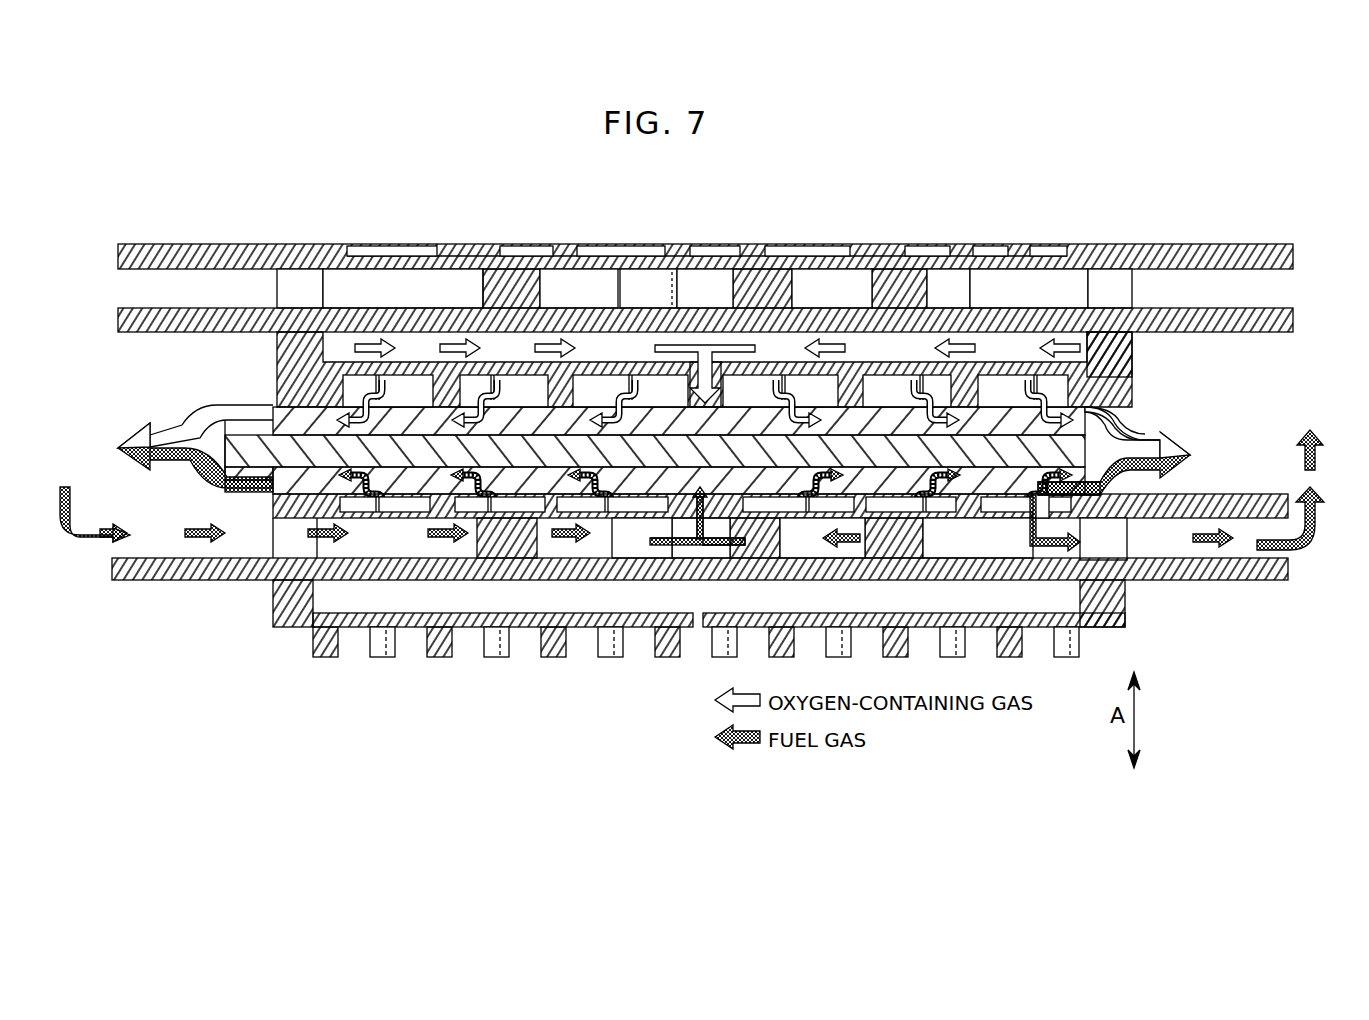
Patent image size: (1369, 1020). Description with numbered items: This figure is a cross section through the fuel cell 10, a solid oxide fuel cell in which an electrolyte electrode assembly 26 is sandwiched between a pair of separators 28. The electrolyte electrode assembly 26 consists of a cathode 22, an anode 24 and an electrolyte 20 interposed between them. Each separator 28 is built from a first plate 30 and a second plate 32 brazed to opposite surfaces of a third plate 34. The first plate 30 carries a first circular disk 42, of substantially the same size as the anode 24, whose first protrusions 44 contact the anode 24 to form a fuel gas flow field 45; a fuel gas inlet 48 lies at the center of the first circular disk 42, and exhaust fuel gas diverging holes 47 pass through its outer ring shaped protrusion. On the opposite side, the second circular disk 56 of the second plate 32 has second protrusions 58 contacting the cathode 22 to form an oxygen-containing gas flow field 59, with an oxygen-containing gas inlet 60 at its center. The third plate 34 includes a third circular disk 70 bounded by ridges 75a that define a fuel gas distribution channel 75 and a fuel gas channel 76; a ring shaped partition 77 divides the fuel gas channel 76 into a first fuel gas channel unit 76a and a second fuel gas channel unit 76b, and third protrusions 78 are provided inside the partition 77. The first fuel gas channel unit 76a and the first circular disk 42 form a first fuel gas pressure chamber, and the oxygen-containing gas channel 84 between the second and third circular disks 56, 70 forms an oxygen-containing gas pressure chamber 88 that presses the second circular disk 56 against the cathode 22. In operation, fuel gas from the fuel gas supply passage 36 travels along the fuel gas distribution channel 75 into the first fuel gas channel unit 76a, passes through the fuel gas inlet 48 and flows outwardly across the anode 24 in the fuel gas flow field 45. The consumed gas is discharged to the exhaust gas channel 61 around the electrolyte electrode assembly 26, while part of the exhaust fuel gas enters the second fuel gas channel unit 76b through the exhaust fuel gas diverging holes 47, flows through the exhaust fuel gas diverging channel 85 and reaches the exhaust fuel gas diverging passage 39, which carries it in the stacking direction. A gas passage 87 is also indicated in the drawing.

The fuel cell 10 is at (964, 176).
The electrolyte 20 is at (207, 415).
The cathode 22 is at (305, 415).
The anode 24 is at (273, 532).
The electrolyte electrode assembly 26 is at (1115, 410).
The separator 28 is at (228, 172).
The first plate 30 is at (165, 240).
The second plate 32 is at (332, 355).
The third plate 34 is at (210, 300).
The fuel gas supply passage 36 is at (90, 487).
The exhaust fuel gas diverging passage 39 is at (1310, 530).
The first circular disk 42 is at (815, 265).
The first protrusions 44 is at (447, 260).
The fuel gas flow field 45 is at (978, 538).
The exhaust fuel gas diverging holes 47 is at (1062, 521).
The fuel gas inlet 48 is at (697, 522).
The second circular disk 56 is at (410, 360).
The second protrusions 58 is at (912, 372).
The oxygen-containing gas flow field 59 is at (1010, 370).
The oxygen-containing gas inlet 60 is at (730, 362).
The exhaust gas channel 61 is at (128, 440).
The third circular disk 70 is at (700, 322).
The fuel gas distribution channel 75 is at (153, 578).
The ridges 75a is at (1115, 288).
The fuel gas channel 76 is at (297, 612).
The first fuel gas channel unit 76a is at (845, 283).
The second fuel gas channel unit 76b is at (335, 280).
The partition 77 is at (500, 285).
The third protrusions 78 is at (643, 285).
The oxygen-containing gas channel 84 is at (1032, 342).
The exhaust fuel gas diverging channel 85 is at (1220, 527).
The gas passage 87 is at (385, 280).
The oxygen-containing gas pressure chamber 88 is at (1028, 336).